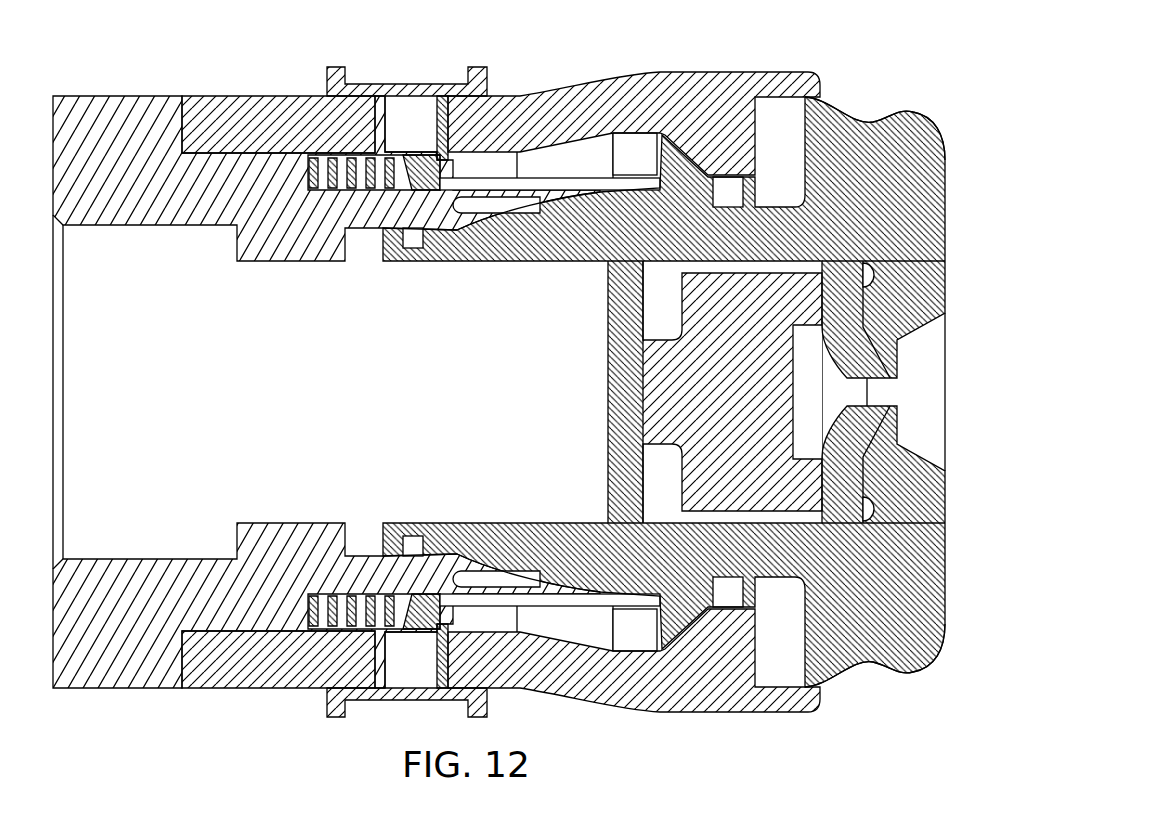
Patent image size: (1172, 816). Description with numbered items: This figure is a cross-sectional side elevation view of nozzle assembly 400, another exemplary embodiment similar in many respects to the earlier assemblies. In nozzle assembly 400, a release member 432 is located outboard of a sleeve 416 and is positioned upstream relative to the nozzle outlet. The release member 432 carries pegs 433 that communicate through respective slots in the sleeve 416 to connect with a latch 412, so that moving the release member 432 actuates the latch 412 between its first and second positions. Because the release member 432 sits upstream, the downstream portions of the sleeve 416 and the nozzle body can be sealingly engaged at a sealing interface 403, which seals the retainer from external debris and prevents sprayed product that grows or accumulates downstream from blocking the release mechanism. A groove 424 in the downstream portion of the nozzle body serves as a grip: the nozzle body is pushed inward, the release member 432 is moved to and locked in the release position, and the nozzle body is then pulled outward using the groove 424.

The nozzle assembly 400 is at (1055, 153).
The sealing interface 403 is at (840, 87).
The latch 412 is at (430, 140).
The sleeve 416 is at (552, 105).
The groove 424 is at (887, 106).
The release member 432 is at (443, 157).
The pegs 433 is at (437, 150).